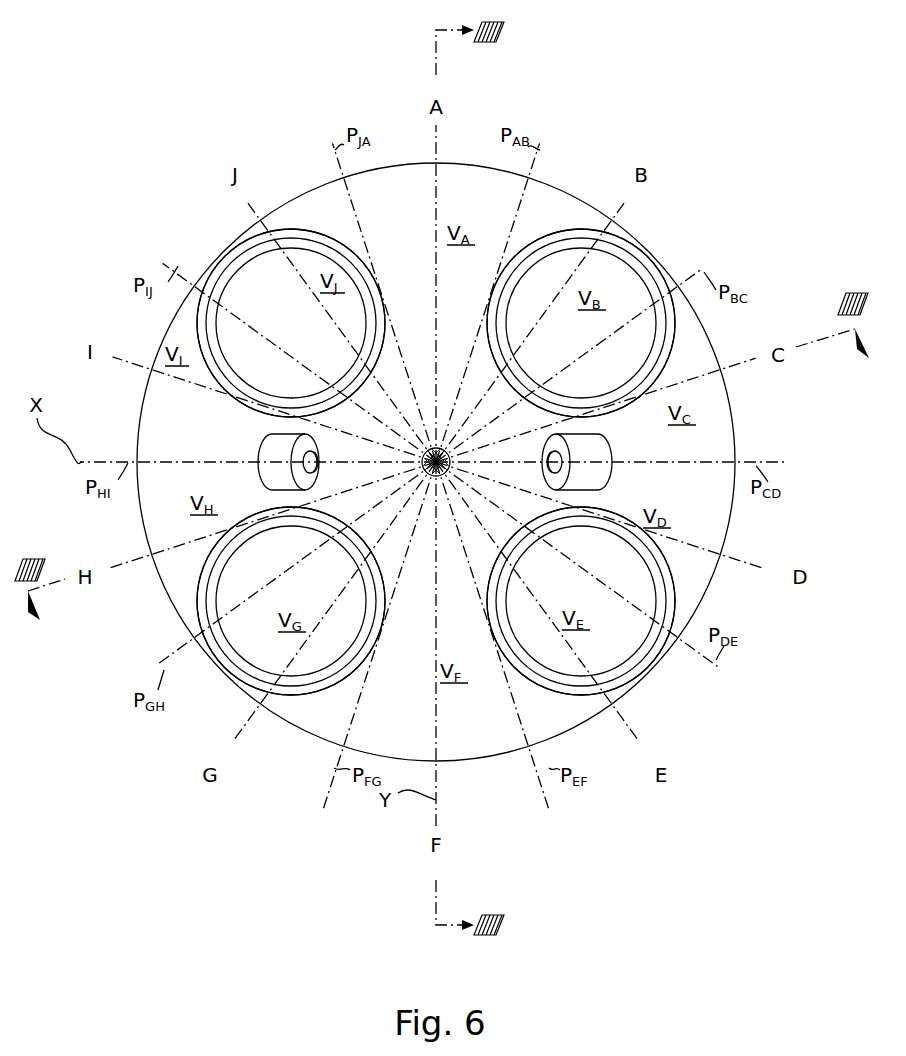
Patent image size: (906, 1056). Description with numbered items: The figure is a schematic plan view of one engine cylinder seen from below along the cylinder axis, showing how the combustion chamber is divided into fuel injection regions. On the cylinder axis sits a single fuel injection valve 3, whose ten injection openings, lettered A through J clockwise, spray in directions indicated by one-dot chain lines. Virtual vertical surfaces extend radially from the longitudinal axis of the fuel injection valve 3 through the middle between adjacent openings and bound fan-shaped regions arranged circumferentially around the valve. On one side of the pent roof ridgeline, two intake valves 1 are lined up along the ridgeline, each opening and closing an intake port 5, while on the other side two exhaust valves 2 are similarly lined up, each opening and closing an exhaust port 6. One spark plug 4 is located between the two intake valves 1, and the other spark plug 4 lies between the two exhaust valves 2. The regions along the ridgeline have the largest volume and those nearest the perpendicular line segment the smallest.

The intake valve 1 is at (245, 283).
The exhaust valve 2 is at (643, 315).
The fuel injection valve 3 is at (448, 470).
The spark plug 4 is at (268, 437).
The intake port 5 is at (305, 250).
The exhaust port 6 is at (627, 275).